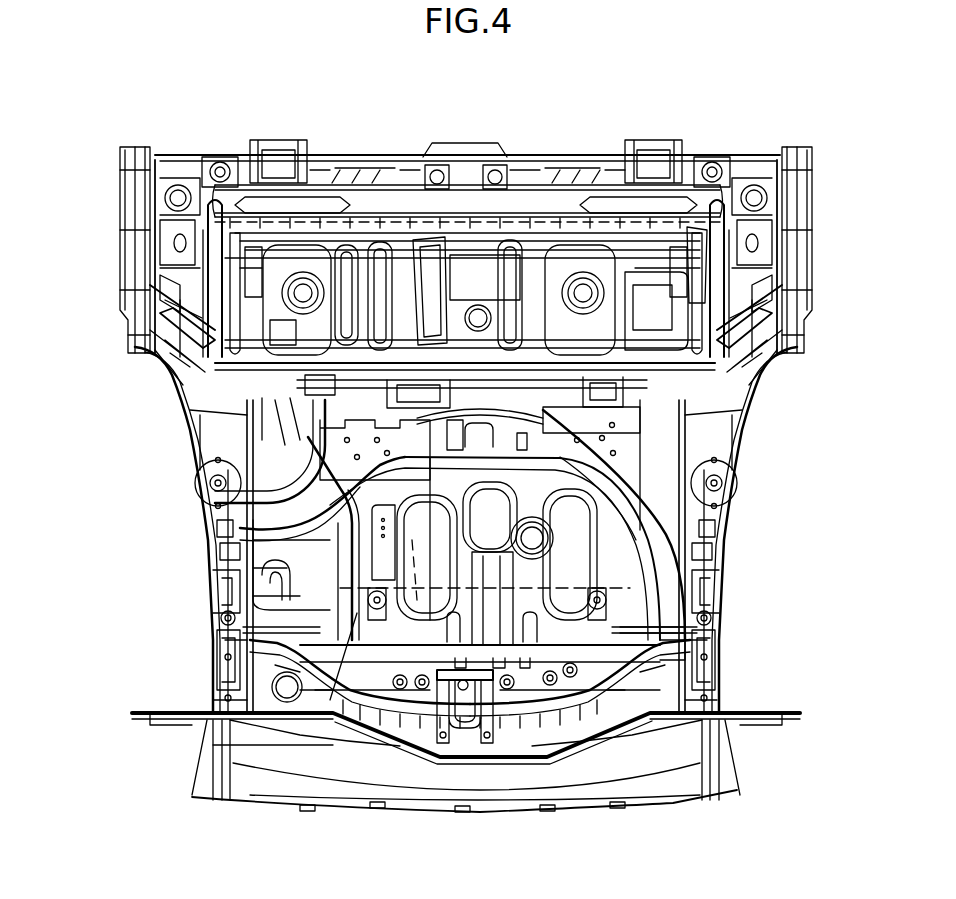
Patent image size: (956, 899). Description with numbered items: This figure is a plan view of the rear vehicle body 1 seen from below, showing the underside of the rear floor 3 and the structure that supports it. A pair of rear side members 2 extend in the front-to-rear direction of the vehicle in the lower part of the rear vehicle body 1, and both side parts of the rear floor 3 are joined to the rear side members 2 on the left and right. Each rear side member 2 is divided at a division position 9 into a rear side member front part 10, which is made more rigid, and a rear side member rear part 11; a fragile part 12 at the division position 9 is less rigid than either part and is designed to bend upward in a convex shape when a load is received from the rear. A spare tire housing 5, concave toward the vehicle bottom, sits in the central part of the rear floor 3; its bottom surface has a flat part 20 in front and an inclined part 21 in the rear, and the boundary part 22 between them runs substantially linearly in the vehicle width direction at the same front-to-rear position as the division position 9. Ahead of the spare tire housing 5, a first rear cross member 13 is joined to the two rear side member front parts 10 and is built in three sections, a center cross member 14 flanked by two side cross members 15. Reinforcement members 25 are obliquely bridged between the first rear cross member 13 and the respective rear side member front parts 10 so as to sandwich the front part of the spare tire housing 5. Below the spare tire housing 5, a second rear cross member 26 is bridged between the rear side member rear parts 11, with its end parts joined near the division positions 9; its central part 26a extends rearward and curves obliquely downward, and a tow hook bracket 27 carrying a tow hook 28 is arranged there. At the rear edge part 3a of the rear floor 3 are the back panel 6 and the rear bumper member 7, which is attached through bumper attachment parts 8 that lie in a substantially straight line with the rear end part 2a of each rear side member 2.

The rear vehicle body 1 is at (98, 113).
The rear side member 2 is at (202, 537).
The rear end part 2a is at (225, 705).
The rear floor 3 is at (287, 567).
The rear edge part 3a is at (300, 747).
The spare tire housing 5 is at (608, 578).
The back panel 6 is at (600, 747).
The rear bumper member 7 is at (403, 803).
The bumper attachment part 8 is at (225, 750).
The division position 9 is at (227, 602).
The rear side member front part 10 is at (215, 517).
The rear side member rear part 11 is at (228, 673).
The fragile part 12 is at (210, 577).
The first rear cross member 13 is at (462, 372).
The center cross member 14 is at (517, 365).
The side cross member 15 is at (212, 392).
The flat part 20 is at (610, 553).
The inclined part 21 is at (700, 650).
The boundary part 22 is at (417, 600).
The reinforcement member 25 is at (333, 477).
The second rear cross member 26 is at (343, 697).
The central part 26a is at (560, 740).
The tow hook bracket 27 is at (507, 697).
The tow hook 28 is at (453, 747).